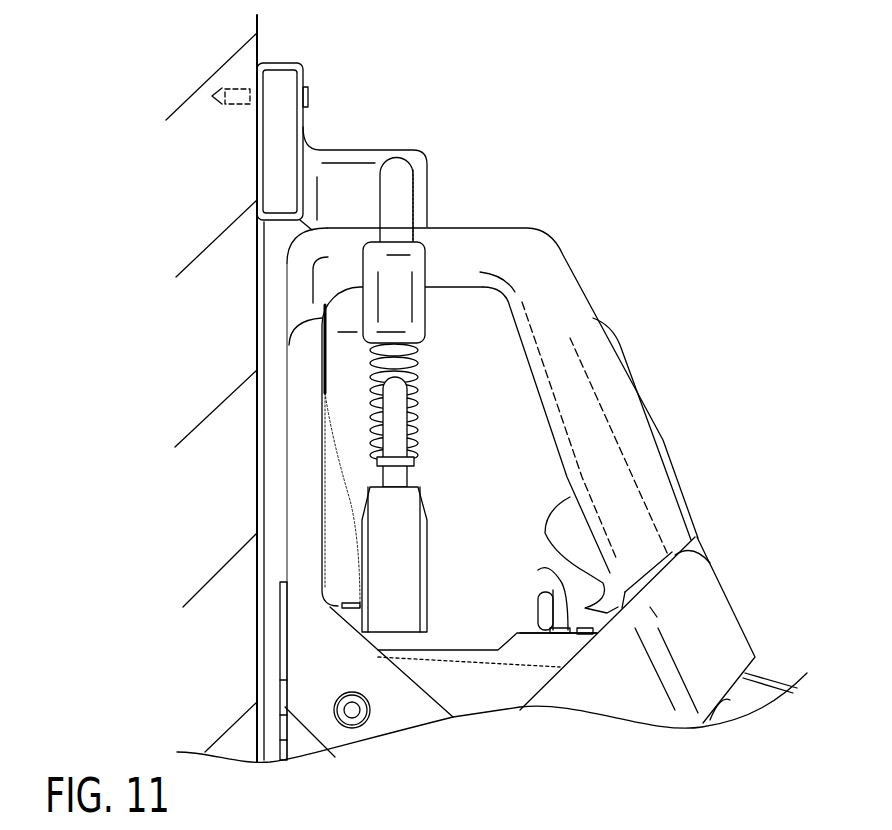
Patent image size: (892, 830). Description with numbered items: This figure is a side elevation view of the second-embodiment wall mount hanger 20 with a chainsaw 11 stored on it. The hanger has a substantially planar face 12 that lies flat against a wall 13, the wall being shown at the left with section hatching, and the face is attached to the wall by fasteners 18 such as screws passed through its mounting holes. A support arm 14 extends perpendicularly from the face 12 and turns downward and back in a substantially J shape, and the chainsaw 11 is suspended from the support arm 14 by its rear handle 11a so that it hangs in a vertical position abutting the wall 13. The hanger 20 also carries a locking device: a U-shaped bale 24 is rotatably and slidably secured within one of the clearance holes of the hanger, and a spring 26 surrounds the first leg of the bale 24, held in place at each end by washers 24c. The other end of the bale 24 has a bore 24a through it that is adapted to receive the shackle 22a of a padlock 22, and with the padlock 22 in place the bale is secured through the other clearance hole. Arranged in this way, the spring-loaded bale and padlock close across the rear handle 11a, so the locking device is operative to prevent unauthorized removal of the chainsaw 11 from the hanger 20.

The chainsaw 11 is at (740, 556).
The rear handle 11a is at (597, 311).
The substantially planar face 12 is at (303, 127).
The wall 13 is at (258, 38).
The support arm 14 is at (427, 313).
The fasteners 18 is at (308, 97).
The wall mount hanger 20 is at (433, 137).
The padlock 22 is at (430, 577).
The shackle 22a is at (398, 467).
The U-shaped bale 24 is at (400, 197).
The bore 24a is at (408, 380).
The washers 24c is at (370, 348).
The spring 26 is at (417, 418).